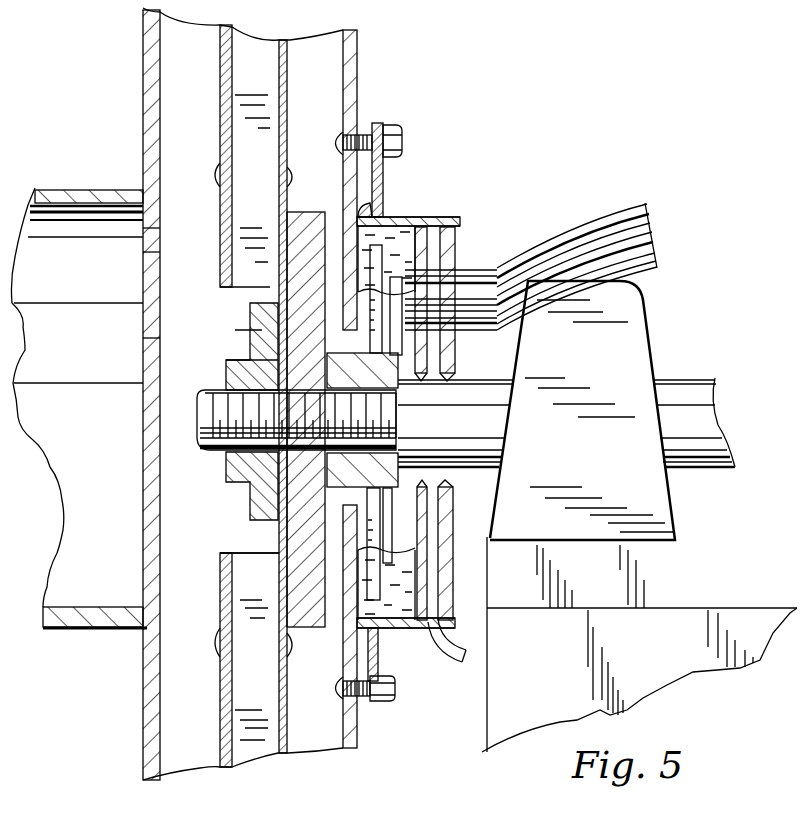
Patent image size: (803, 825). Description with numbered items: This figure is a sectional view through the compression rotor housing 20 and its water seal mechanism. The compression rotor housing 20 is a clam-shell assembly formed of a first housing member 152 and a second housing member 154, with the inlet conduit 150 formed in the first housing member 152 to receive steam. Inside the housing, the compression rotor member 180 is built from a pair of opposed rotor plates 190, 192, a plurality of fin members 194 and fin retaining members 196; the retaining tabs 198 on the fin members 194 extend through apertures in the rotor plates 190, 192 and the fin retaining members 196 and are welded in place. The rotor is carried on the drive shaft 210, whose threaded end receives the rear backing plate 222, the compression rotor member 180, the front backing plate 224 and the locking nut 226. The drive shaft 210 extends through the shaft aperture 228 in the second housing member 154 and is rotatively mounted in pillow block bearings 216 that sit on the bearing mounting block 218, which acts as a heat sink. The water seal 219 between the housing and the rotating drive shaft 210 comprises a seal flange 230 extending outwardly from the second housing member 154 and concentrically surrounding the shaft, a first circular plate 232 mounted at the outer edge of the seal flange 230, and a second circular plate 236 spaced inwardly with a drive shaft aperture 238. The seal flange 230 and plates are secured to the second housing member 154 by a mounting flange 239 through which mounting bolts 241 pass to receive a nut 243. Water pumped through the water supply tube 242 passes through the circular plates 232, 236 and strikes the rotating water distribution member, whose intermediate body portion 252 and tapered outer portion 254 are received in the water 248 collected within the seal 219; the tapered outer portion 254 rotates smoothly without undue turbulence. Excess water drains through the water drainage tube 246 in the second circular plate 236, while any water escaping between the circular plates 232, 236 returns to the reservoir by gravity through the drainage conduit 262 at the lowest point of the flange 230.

The compression rotor housing 20 is at (368, 65).
The inlet conduit 150 is at (90, 188).
The first housing member 152 is at (143, 63).
The second housing member 154 is at (360, 88).
The compression rotor member 180 is at (215, 112).
The rotor plate 190 is at (222, 563).
The rotor plate 192 is at (262, 530).
The fin member 194 is at (225, 230).
The fin retaining member 196 is at (220, 62).
The retaining tab 198 is at (215, 176).
The drive shaft 210 is at (197, 402).
The pillow block bearing 216 is at (645, 303).
The bearing mounting block 218 is at (750, 612).
The water seal 219 is at (440, 195).
The rear backing plate 222 is at (300, 212).
The front backing plate 224 is at (262, 298).
The locking nut 226 is at (240, 358).
The shaft aperture 228 is at (398, 470).
The seal flange 230 is at (405, 217).
The first circular plate 232 is at (455, 265).
The second circular plate 236 is at (445, 245).
The drive shaft aperture 238 is at (381, 377).
The mounting flange 239 is at (385, 130).
The mounting bolt 241 is at (330, 140).
The water supply tube 242 is at (657, 245).
The nut 243 is at (402, 140).
The water drainage tube 246 is at (628, 205).
The water 248 is at (442, 226).
The intermediate body portion 252 is at (440, 500).
The tapered outer portion 254 is at (390, 600).
The drainage conduit 262 is at (468, 656).